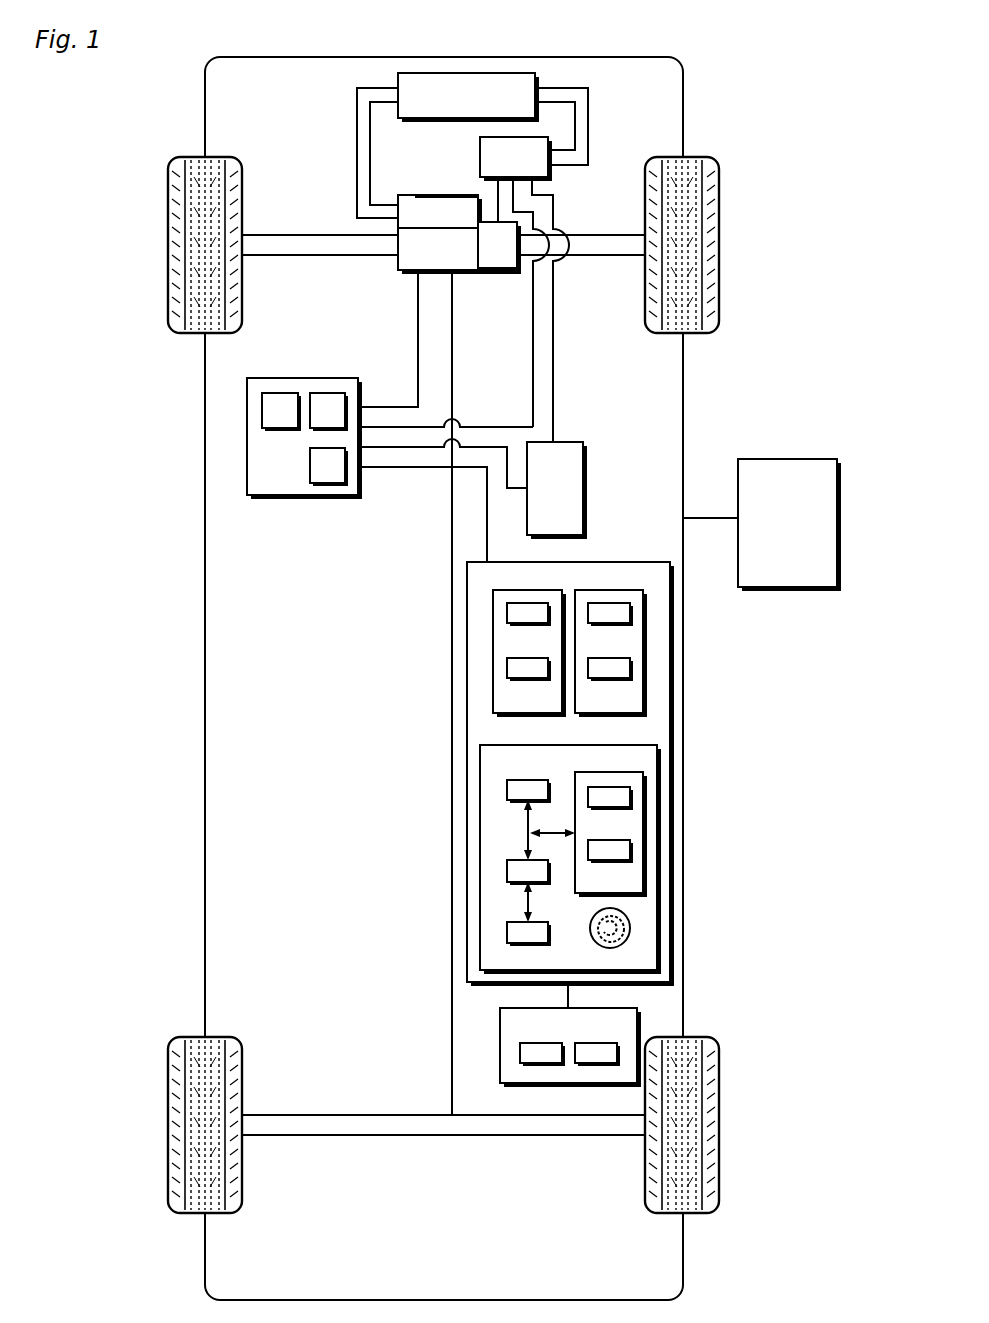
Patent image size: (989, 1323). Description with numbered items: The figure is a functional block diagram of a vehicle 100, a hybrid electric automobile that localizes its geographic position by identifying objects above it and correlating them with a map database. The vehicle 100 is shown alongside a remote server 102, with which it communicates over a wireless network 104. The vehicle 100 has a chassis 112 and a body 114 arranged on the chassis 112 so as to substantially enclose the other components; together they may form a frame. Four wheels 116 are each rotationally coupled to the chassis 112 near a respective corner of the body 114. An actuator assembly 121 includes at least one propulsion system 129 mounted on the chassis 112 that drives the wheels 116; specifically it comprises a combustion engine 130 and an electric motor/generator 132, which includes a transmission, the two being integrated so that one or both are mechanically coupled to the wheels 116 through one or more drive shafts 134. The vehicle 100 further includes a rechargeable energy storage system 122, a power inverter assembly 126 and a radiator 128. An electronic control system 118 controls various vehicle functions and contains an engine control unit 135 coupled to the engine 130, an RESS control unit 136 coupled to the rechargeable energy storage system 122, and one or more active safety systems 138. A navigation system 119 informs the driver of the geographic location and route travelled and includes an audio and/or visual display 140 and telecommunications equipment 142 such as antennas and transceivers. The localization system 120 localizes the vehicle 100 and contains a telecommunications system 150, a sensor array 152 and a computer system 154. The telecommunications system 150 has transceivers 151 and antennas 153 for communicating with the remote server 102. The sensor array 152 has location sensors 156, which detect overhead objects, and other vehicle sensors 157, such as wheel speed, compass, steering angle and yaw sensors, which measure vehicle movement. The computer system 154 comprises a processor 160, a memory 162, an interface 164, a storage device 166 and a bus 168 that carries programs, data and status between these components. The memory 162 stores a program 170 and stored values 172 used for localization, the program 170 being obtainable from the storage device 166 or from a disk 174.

The vehicle 100 is at (720, 68).
The remote server 102 is at (803, 460).
The wireless network 104 is at (712, 517).
The chassis 112 is at (451, 623).
The body 114 is at (203, 505).
The wheels 116 is at (176, 225).
The electronic control system 118 is at (328, 435).
The navigation system 119 is at (500, 1040).
The localization system 120 is at (605, 560).
The actuator assembly 121 is at (402, 293).
The rechargeable energy storage system 122 is at (585, 472).
The power inverter assembly 126 is at (492, 168).
The radiator 128 is at (443, 103).
The propulsion system 129 is at (430, 195).
The combustion engine 130 is at (413, 258).
The electric motor/generator 132 is at (505, 253).
The drive shafts 134 is at (331, 236).
The engine control unit 135 is at (285, 403).
The RESS control unit 136 is at (329, 400).
The active safety systems 138 is at (337, 478).
The audio and/or visual display 140 is at (556, 1043).
The telecommunications equipment 142 is at (610, 1043).
The telecommunications system 150 is at (520, 573).
The transceivers 151 is at (542, 617).
The sensor array 152 is at (602, 573).
The antennas 153 is at (542, 672).
The computer system 154 is at (557, 745).
The location sensors 156 is at (622, 617).
The other vehicle sensors 157 is at (624, 672).
The processor 160 is at (545, 780).
The memory 162 is at (597, 772).
The interface 164 is at (537, 883).
The storage device 166 is at (508, 931).
The bus 168 is at (526, 836).
The program 170 is at (622, 798).
The stored values 172 is at (624, 856).
The disk 174 is at (591, 931).